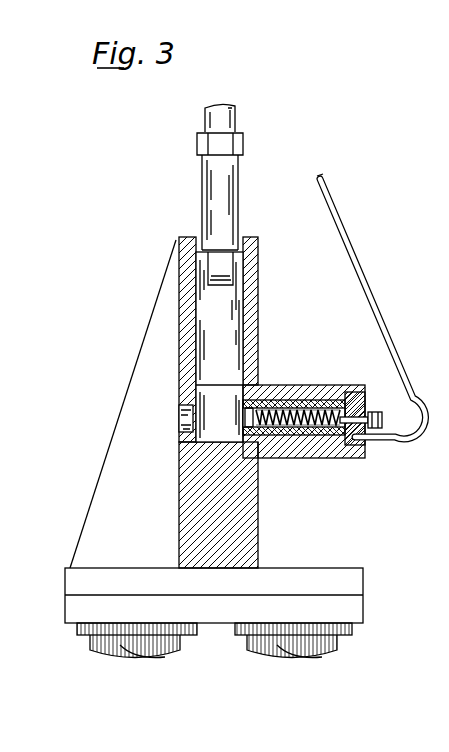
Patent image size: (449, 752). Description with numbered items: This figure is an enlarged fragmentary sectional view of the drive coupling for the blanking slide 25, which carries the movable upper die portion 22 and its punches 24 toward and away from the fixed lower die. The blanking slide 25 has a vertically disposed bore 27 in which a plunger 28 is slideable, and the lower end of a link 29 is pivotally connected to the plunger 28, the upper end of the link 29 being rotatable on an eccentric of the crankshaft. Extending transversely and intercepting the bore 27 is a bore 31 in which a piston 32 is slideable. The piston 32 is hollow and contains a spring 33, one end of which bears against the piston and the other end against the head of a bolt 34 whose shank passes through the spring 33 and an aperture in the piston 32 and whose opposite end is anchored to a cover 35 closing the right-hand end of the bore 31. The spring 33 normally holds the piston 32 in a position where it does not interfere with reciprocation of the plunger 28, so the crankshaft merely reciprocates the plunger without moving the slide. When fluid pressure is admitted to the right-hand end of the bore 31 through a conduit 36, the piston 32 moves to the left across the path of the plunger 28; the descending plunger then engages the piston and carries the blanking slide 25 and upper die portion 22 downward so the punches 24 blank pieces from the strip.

The upper die portion 22 is at (76, 590).
The punches 24 is at (122, 644).
The blanking slide 25 is at (128, 413).
The bore 27 is at (205, 312).
The plunger 28 is at (223, 348).
The link 29 is at (227, 206).
The bore 31 is at (292, 440).
The piston 32 is at (295, 385).
The spring 33 is at (312, 424).
The bolt 34 is at (350, 403).
The cover 35 is at (378, 447).
The conduit 36 is at (362, 270).